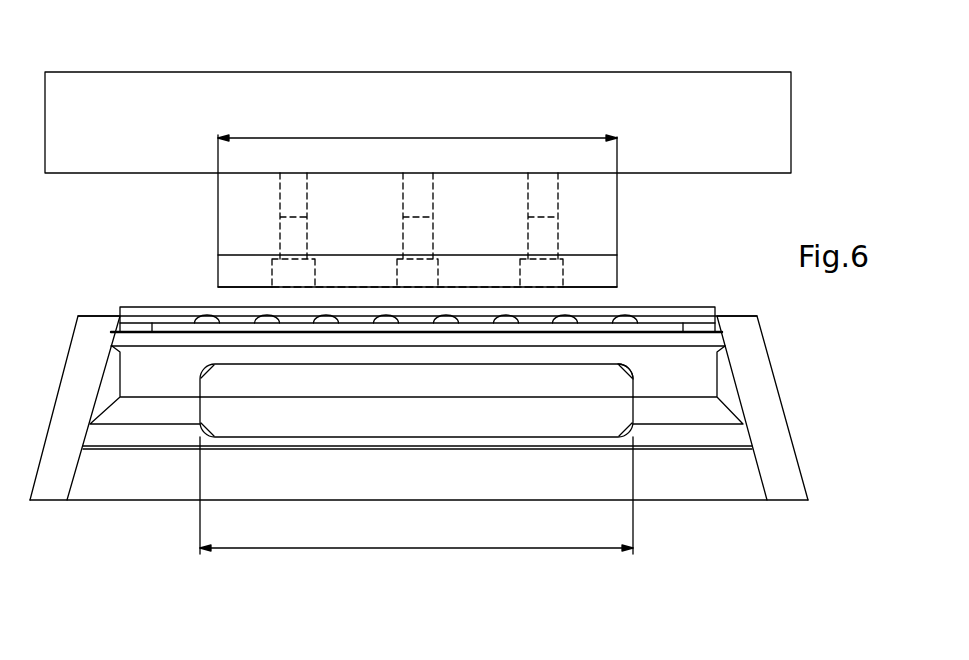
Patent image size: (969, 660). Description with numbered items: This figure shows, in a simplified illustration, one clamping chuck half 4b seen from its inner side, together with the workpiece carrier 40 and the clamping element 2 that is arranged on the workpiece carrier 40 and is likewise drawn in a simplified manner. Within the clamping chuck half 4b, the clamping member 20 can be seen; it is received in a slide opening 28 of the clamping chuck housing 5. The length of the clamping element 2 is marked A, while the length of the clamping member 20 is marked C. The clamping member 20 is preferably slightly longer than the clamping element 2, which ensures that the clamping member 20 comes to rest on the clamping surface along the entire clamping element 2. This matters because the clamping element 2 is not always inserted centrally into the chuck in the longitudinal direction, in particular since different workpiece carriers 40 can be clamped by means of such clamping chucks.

The workpiece carrier 40 is at (669, 100).
The clamping element 2 is at (641, 219).
The clamping chuck half 4b is at (792, 351).
The clamping chuck housing 5 is at (770, 417).
The clamping member 20 is at (429, 410).
The slide opening 28 is at (648, 375).